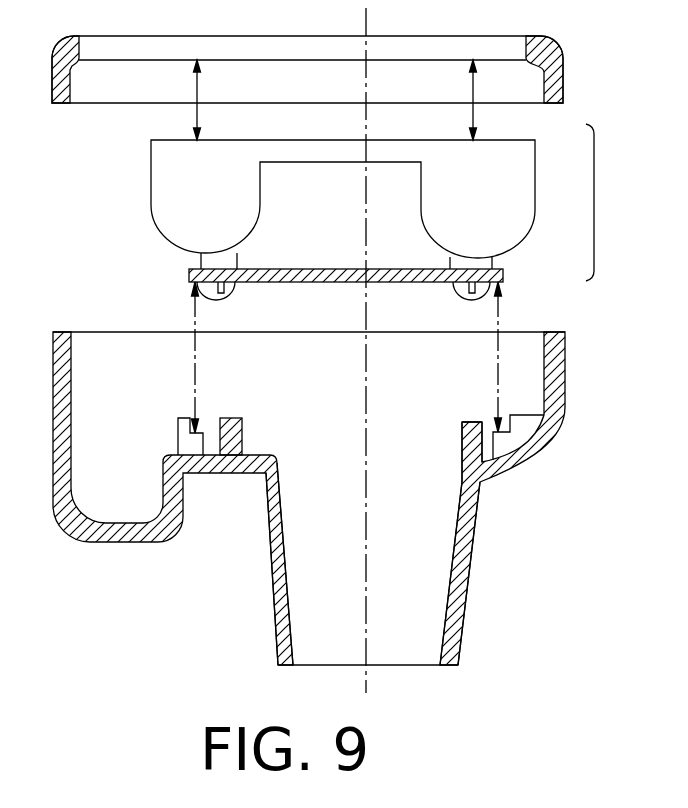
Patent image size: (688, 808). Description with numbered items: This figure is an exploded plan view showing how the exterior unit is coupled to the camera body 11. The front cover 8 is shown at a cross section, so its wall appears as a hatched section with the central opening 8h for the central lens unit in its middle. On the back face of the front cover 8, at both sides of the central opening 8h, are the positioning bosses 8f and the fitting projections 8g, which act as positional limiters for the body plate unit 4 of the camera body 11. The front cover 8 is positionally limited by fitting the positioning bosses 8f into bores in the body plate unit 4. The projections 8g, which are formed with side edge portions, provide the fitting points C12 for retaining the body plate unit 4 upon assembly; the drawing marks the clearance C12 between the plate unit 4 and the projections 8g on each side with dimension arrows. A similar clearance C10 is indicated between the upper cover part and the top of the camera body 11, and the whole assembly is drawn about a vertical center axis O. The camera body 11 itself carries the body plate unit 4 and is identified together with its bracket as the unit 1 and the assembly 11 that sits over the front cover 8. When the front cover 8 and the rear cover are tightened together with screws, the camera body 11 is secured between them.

The tray 1 is at (516, 141).
The body plate unit 4 is at (505, 273).
The front cover 8 is at (325, 498).
The positioning boss 8f is at (236, 418).
The fitting projection 8g is at (178, 440).
The central opening 8h is at (290, 548).
The camera body 11 is at (594, 178).
The clearance C10 is at (197, 108).
The fitting point C12 is at (195, 318).
The axis O is at (368, 680).